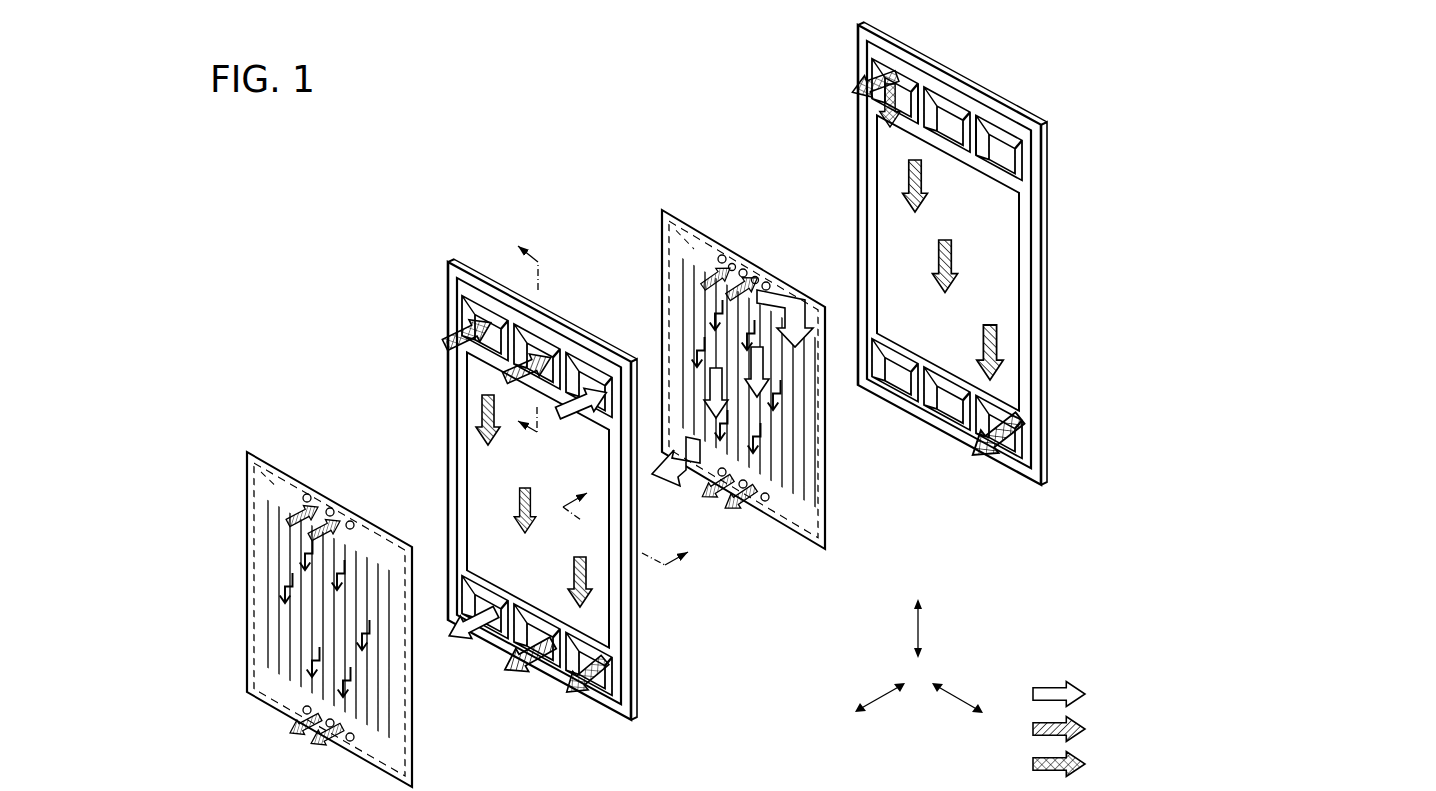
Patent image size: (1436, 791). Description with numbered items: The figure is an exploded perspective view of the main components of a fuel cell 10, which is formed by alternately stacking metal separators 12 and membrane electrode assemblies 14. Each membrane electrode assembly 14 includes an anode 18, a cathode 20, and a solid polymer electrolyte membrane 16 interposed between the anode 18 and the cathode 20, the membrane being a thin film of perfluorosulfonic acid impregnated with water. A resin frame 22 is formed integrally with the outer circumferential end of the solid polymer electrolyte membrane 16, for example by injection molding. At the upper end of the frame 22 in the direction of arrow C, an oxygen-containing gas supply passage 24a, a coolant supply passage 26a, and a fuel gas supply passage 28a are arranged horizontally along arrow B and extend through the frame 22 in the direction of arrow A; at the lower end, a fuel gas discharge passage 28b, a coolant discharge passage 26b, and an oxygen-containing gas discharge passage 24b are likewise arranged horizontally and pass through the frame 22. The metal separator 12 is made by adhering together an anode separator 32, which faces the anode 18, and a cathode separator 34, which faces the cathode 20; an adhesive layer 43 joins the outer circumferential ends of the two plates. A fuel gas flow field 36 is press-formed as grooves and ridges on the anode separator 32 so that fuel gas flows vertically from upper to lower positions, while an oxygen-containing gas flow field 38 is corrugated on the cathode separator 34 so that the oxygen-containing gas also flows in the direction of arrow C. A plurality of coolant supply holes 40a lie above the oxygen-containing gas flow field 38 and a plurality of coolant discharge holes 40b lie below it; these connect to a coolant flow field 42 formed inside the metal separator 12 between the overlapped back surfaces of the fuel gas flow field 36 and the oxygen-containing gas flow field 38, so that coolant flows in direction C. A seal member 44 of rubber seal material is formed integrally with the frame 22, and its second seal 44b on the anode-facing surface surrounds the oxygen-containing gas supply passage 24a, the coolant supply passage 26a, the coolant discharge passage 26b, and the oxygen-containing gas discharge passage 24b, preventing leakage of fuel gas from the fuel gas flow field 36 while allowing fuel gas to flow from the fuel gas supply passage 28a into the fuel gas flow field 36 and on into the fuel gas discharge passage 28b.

The fuel cell 10 is at (346, 200).
The metal separator 12 is at (246, 455).
The membrane electrode assembly 14 is at (447, 268).
The solid polymer electrolyte membrane 16 is at (743, 381).
The anode 18 is at (900, 181).
The cathode 20 is at (743, 381).
The resin frame 22 is at (628, 608).
The oxygen-containing gas supply passage 24a is at (597, 370).
The oxygen-containing gas discharge passage 24b is at (488, 610).
The coolant supply passage 26a is at (536, 352).
The coolant discharge passage 26b is at (543, 640).
The fuel gas supply passage 28a is at (482, 326).
The fuel gas discharge passage 28b is at (590, 666).
The anode separator 32 is at (806, 469).
The cathode separator 34 is at (808, 520).
The fuel gas flow field 36 is at (521, 491).
The oxygen-containing gas flow field 38 is at (765, 372).
The coolant supply holes 40a is at (723, 255).
The coolant discharge holes 40b is at (766, 500).
The coolant flow field 42 is at (374, 645).
The adhesive layer 43 is at (258, 452).
The seal member 44 is at (455, 432).
The second seal 44b is at (952, 80).